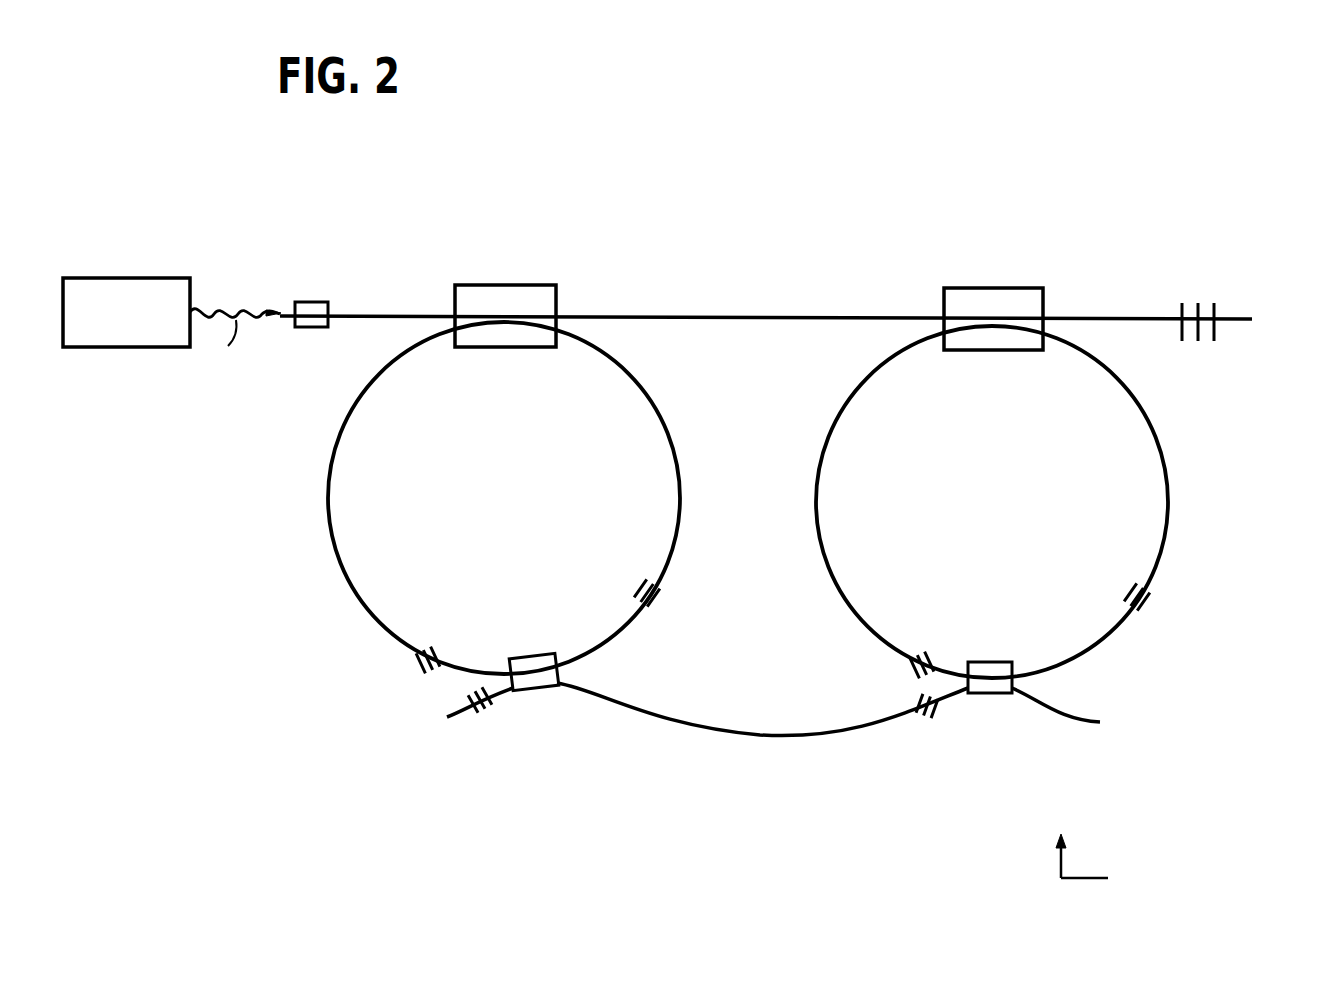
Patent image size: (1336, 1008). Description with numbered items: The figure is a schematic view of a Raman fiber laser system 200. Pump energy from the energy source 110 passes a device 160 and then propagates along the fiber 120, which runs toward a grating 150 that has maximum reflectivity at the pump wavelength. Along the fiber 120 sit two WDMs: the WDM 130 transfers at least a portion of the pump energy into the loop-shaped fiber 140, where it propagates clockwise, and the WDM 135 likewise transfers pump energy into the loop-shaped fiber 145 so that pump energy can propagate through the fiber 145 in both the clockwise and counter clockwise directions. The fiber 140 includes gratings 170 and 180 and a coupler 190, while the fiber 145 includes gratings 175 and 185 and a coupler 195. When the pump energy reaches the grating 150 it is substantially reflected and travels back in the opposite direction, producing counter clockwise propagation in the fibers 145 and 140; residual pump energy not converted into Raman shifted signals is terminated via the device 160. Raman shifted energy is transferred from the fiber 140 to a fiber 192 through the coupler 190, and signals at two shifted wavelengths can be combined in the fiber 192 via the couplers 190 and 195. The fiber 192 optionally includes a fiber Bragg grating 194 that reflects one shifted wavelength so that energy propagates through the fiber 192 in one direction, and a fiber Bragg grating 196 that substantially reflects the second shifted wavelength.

The energy source 110 is at (150, 326).
The fiber 120 is at (357, 313).
The WDM 130 is at (527, 295).
The WDM 135 is at (1018, 297).
The loop-shaped fiber 140 is at (328, 483).
The loop-shaped fiber 145 is at (1166, 458).
The grating 150 is at (1188, 304).
The device 160 is at (312, 302).
The grating 170 is at (420, 665).
The grating 175 is at (912, 668).
The grating 180 is at (663, 588).
The grating 185 is at (1148, 592).
The coupler 190 is at (560, 673).
The fiber 192 is at (462, 716).
The fiber Bragg grating 194 is at (490, 701).
The coupler 195 is at (1015, 677).
The fiber Bragg grating 196 is at (930, 710).
The Raman fiber laser system 200 is at (1168, 894).